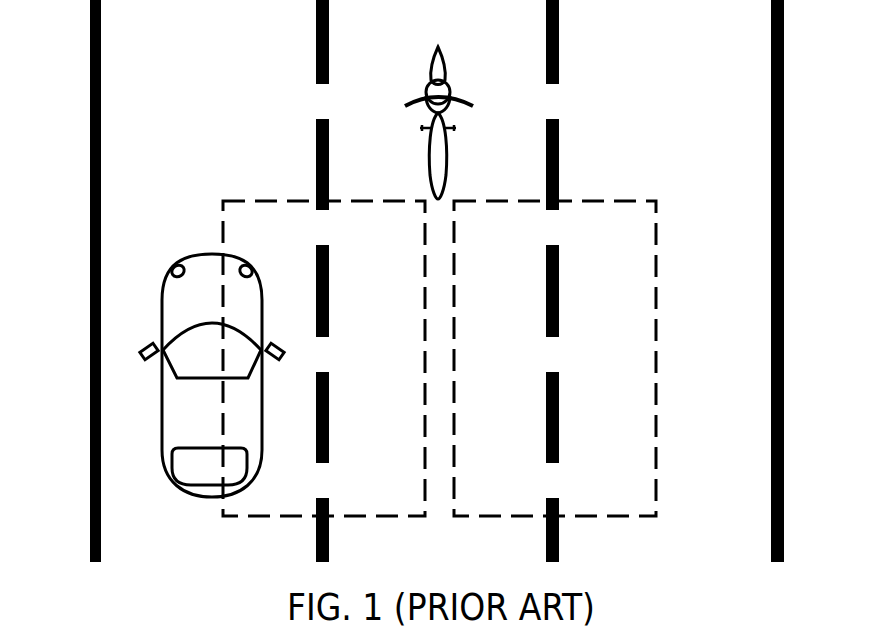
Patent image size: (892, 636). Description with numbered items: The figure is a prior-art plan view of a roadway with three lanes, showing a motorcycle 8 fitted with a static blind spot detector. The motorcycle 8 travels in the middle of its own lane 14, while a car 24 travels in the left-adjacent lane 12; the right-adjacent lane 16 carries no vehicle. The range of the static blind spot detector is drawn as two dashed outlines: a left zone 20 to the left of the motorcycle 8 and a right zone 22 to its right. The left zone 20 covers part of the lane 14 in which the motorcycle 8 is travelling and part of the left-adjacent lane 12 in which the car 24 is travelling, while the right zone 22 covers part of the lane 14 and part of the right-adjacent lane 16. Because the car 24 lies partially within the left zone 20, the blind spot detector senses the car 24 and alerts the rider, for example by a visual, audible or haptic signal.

The motorcycle 8 is at (431, 63).
The left-adjacent lane 12 is at (209, 282).
The lane 14 is at (490, 282).
The right-adjacent lane 16 is at (713, 282).
The left zone 20 is at (273, 199).
The right zone 22 is at (592, 200).
The car 24 is at (187, 255).